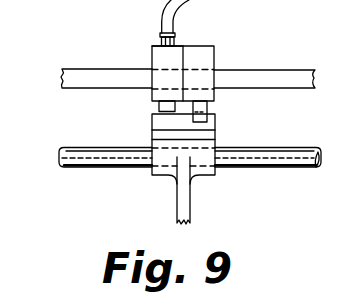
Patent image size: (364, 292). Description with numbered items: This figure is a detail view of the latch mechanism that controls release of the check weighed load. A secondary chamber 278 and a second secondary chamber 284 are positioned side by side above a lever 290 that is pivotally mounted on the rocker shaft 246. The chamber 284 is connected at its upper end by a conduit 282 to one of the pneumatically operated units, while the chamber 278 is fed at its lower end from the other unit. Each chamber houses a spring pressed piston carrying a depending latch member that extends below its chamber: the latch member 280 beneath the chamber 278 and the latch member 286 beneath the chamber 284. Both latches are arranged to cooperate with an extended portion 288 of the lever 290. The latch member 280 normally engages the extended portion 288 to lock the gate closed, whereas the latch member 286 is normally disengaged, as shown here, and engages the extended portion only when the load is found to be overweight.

The rocker shaft 246 is at (247, 167).
The secondary chamber 278 is at (210, 58).
The latch member 280 is at (208, 109).
The conduit 282 is at (166, 12).
The secondary chamber 284 is at (157, 53).
The latch member 286 is at (162, 103).
The extended portion 288 is at (157, 122).
The lever 290 is at (191, 198).